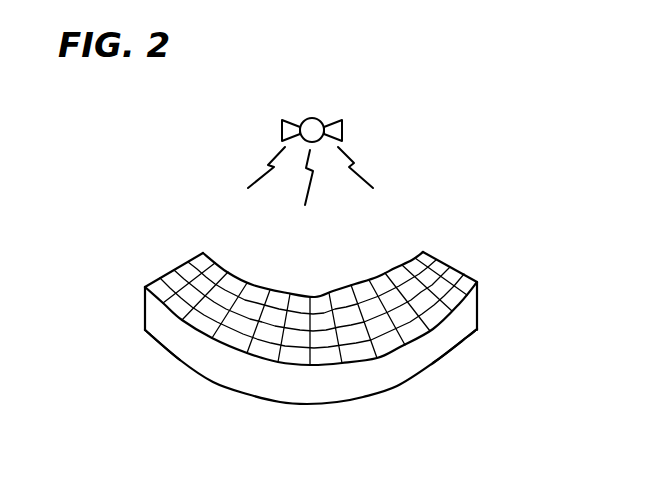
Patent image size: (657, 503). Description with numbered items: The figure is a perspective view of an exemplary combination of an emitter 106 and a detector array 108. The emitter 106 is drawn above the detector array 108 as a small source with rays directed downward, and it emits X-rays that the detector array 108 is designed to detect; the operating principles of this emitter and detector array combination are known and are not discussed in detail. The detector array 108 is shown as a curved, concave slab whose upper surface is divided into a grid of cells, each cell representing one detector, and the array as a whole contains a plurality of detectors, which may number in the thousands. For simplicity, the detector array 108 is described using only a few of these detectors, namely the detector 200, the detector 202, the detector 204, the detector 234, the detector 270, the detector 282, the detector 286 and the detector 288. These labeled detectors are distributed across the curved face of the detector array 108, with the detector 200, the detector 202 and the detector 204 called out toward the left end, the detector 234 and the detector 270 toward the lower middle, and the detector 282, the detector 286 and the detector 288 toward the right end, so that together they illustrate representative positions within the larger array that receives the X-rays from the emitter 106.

The emitter 106 is at (318, 118).
The detector 200 is at (204, 254).
The detector 202 is at (190, 269).
The detector 204 is at (145, 288).
The detector 234 is at (265, 315).
The detector 270 is at (337, 364).
The detector 282 is at (422, 256).
The detector 286 is at (460, 268).
The detector 288 is at (463, 290).
The detector array 108 is at (460, 327).